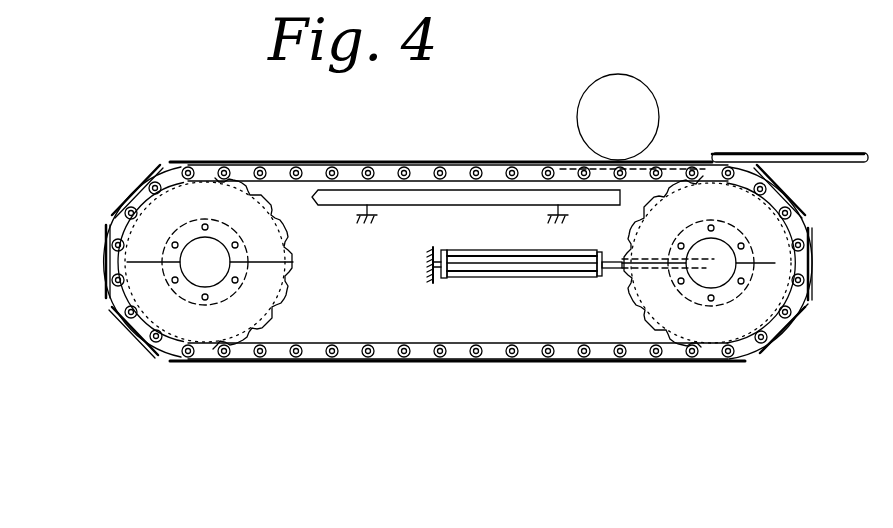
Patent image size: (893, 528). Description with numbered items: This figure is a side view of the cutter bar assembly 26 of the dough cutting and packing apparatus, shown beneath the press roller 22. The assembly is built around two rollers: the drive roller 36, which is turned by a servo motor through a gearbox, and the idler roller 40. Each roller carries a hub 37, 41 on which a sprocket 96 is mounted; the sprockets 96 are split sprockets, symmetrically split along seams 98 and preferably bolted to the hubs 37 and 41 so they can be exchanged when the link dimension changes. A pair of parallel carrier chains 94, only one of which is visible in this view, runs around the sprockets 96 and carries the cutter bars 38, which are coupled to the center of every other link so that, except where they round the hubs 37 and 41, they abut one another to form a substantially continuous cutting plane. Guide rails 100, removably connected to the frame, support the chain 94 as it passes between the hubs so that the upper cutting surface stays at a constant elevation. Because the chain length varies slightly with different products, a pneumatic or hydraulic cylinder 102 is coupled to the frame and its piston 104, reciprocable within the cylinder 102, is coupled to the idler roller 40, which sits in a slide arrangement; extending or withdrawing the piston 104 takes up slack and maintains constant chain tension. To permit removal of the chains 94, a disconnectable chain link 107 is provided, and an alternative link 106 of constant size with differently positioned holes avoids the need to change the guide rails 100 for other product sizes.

The press roller 22 is at (634, 130).
The cutter bar assembly 26 is at (103, 195).
The drive roller 36 is at (207, 264).
The hub 37 is at (226, 237).
The cutter bars 38 is at (147, 178).
The idler roller 40 is at (722, 289).
The hub 41 is at (738, 292).
The carrier chains 94 is at (279, 170).
The sprockets 96 is at (237, 322).
The seams 98 is at (268, 264).
The guide rails 100 is at (421, 200).
The cylinder 102 is at (503, 279).
The piston 104 is at (608, 270).
The link 106 is at (170, 356).
The disconnectable chain link 107 is at (112, 297).